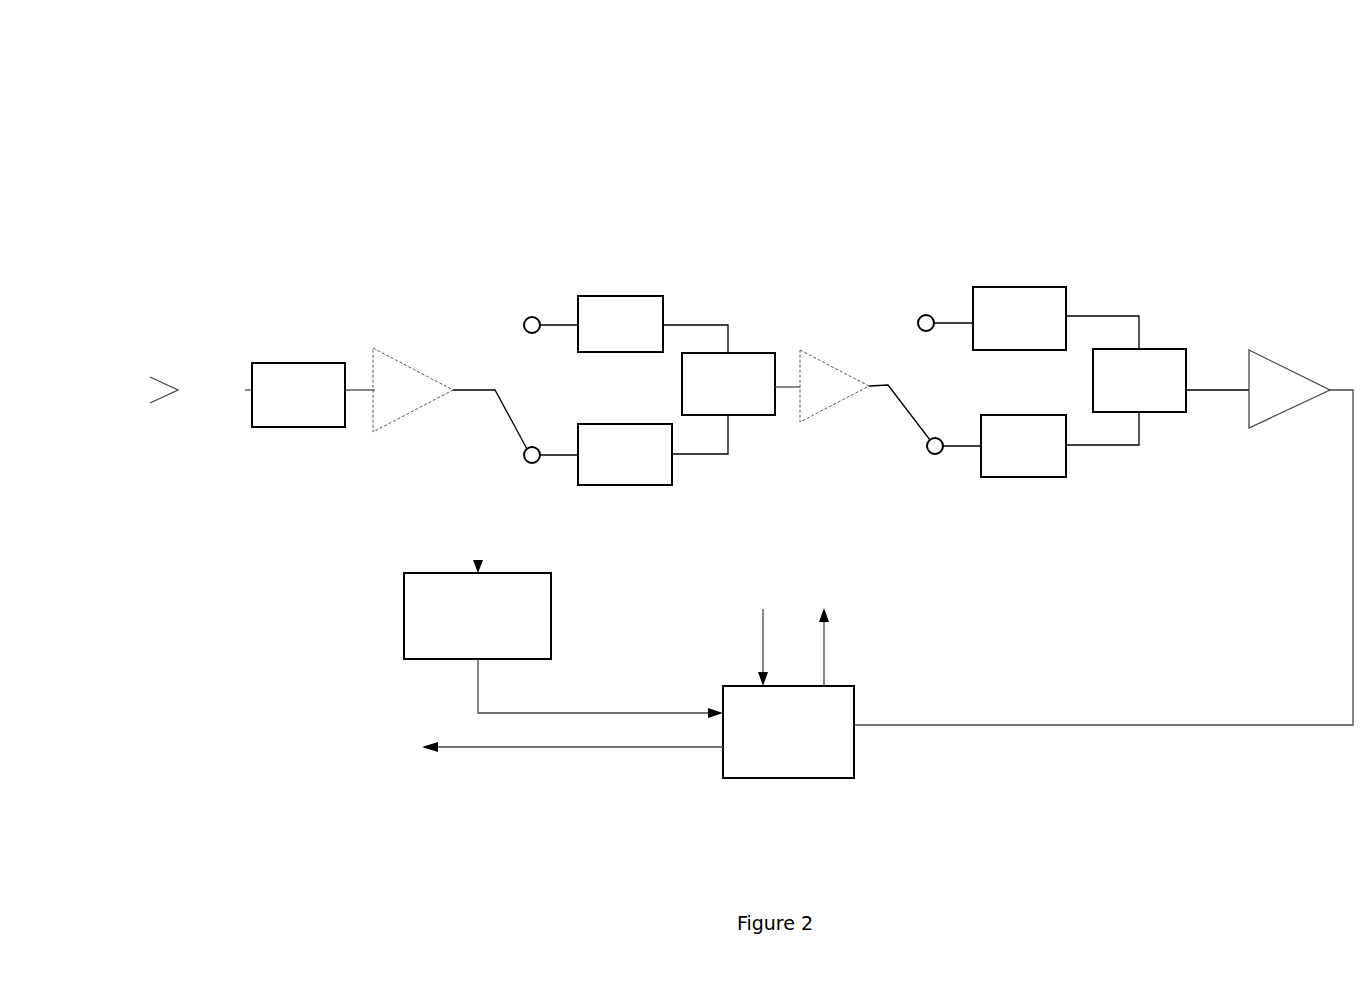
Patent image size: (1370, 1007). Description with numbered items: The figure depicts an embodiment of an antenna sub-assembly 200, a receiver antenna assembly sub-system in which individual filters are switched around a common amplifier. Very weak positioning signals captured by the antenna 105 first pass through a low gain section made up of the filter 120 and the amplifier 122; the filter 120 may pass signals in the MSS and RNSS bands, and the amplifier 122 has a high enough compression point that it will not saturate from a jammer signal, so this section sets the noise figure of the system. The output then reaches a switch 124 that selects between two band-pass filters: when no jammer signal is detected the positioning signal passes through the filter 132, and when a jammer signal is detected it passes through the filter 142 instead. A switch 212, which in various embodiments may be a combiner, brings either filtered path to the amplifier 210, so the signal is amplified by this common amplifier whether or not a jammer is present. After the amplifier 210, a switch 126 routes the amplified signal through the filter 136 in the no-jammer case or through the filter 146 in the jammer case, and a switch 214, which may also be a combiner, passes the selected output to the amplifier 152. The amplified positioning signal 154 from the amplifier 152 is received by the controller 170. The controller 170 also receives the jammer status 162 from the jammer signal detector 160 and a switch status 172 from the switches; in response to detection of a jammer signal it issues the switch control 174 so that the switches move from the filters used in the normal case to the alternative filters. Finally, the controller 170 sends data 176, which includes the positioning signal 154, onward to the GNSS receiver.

The antenna sub-assembly 200 is at (139, 54).
The antenna 105 is at (158, 371).
The filter 120 is at (310, 395).
The amplifier 122 is at (413, 390).
The switch 124 is at (537, 401).
The filter 132 is at (620, 324).
The filter 142 is at (625, 454).
The switch 212 is at (715, 403).
The amplifier 210 is at (834, 386).
The switch 126 is at (923, 387).
The filter 136 is at (1019, 318).
The filter 146 is at (1023, 446).
The switch 214 is at (1127, 399).
The amplifier 152 is at (1289, 389).
The amplified positioning signal 154 is at (1050, 681).
The jammer signal detector 160 is at (465, 640).
The jammer status 162 is at (604, 708).
The controller 170 is at (775, 732).
The switch status 172 is at (715, 644).
The switch control 174 is at (854, 644).
The data 176 is at (573, 803).